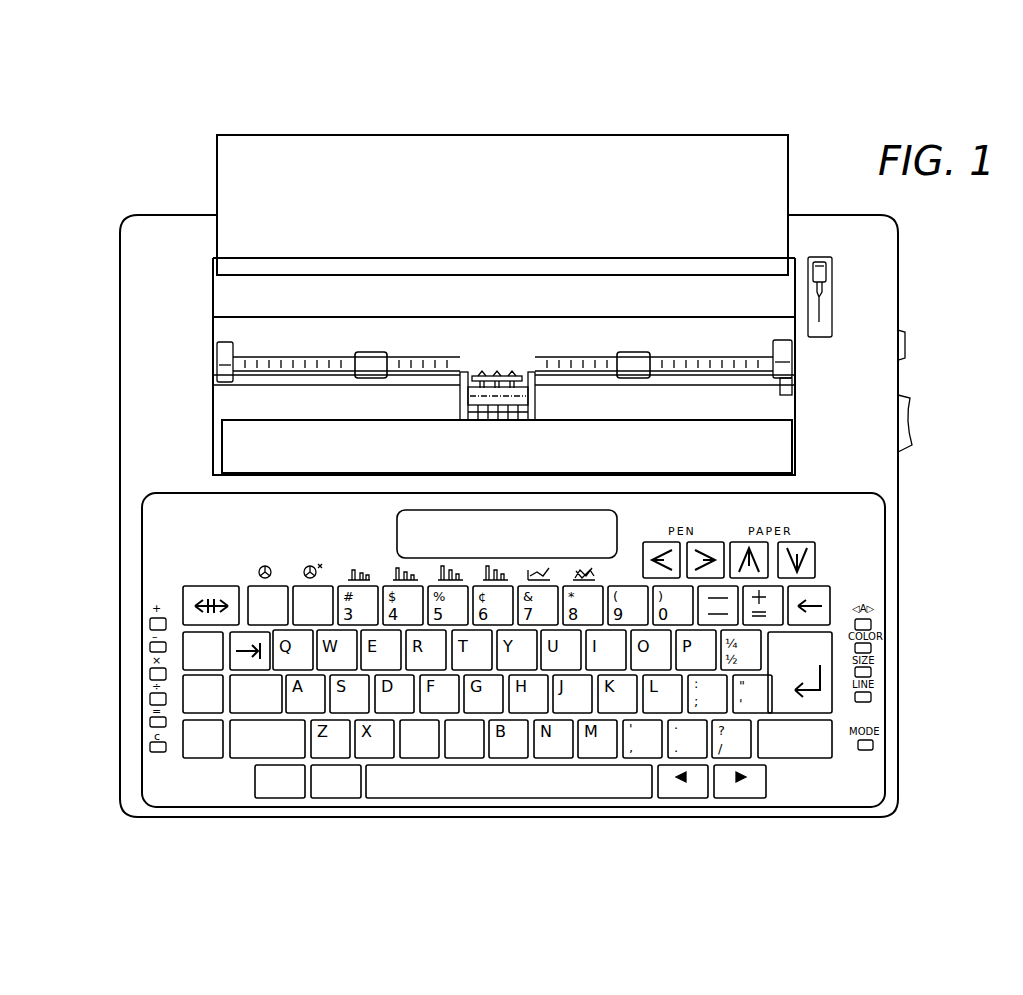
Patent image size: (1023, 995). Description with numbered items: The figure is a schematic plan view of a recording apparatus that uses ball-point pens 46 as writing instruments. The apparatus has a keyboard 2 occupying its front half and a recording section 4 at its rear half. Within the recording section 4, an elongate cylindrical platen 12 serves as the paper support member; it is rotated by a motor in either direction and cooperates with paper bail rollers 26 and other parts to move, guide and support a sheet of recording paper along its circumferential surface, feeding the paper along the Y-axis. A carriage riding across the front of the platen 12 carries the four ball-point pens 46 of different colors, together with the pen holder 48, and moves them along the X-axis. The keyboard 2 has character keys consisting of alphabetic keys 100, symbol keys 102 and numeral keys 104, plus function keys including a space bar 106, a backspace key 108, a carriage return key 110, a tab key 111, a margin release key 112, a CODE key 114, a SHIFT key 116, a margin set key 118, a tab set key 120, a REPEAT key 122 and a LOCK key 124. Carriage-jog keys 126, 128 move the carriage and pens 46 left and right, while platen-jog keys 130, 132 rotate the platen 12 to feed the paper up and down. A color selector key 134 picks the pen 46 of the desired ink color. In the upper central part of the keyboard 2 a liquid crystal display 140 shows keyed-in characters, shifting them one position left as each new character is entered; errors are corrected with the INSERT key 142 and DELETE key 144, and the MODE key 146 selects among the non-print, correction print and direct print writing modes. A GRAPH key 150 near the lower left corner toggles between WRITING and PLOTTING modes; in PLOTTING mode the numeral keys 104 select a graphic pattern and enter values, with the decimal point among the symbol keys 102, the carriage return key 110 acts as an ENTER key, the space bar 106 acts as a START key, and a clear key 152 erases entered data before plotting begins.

The keyboard 2 is at (905, 613).
The recording section 4 is at (912, 281).
The platen 12 is at (515, 326).
The paper bail rollers 26 is at (378, 354).
The ball-point pens 46 is at (497, 413).
The pen carriage 48 is at (535, 398).
The alphabetic keys 100 is at (422, 760).
The symbol keys 102 is at (696, 748).
The numeral keys 104 is at (274, 597).
The space key (space bar) 106 is at (545, 799).
The backspace key 108 is at (823, 598).
The carriage return key 110 is at (833, 702).
The tab key 111 is at (240, 638).
The margin release key 112 is at (193, 594).
The CODE key 114 is at (195, 760).
The SHIFT key 116 is at (250, 760).
The margin set key 118 is at (182, 647).
The tab set key 120 is at (185, 695).
The REPEAT key 122 is at (335, 799).
The LOCK key 124 is at (247, 712).
The carriage-jog key 126 is at (656, 548).
The carriage-jog key 128 is at (710, 548).
The platen-jog key 130 is at (740, 548).
The platen-jog key 132 is at (804, 548).
The color selector key 134 is at (871, 648).
The liquid crystal display 140 is at (531, 515).
The INSERT key 142 is at (675, 799).
The DELETE key 144 is at (748, 799).
The MODE key 146 is at (873, 745).
The GRAPH key 150 is at (282, 799).
The clear key 152 is at (149, 747).